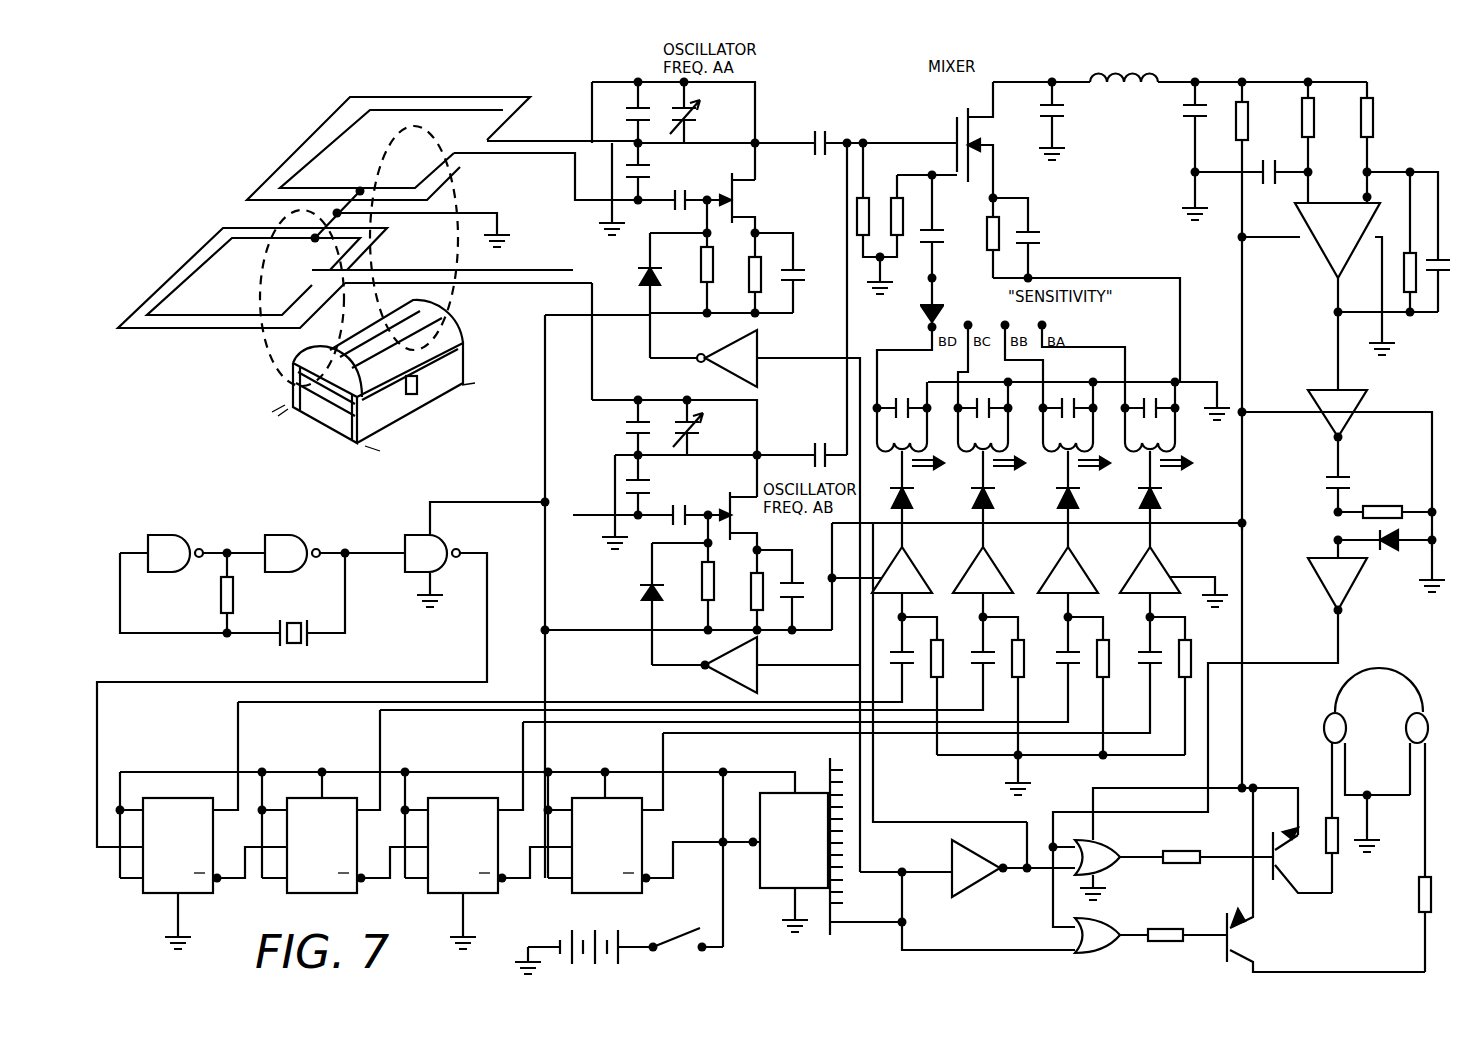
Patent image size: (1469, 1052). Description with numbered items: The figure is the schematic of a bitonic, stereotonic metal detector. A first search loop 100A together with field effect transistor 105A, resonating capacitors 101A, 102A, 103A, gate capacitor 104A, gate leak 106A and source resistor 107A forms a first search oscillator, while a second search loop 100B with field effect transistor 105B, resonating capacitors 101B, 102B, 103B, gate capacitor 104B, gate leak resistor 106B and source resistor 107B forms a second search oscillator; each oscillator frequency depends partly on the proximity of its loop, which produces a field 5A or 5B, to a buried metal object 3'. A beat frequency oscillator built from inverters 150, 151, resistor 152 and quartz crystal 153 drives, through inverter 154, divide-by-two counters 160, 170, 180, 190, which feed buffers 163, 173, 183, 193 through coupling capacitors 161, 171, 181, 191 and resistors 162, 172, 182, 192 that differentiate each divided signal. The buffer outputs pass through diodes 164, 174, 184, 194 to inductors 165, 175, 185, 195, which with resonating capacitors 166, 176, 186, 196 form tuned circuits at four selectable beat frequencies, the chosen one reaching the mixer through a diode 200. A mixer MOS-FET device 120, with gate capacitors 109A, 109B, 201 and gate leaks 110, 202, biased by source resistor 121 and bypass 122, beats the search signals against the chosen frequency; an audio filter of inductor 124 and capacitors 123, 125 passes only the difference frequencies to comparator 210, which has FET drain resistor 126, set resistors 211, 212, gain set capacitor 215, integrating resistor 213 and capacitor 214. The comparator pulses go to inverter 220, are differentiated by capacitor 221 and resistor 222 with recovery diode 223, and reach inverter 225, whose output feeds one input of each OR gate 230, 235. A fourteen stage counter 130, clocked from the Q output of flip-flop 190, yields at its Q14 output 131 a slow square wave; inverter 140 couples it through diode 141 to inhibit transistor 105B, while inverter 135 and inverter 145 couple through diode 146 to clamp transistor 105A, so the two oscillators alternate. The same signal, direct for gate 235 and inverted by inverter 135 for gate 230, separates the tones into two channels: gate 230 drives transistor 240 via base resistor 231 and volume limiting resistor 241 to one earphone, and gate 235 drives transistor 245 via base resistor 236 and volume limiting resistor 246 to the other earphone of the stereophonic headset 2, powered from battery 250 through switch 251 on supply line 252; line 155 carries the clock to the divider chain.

The headphones 2 is at (1385, 672).
The metal object 3' is at (373, 375).
The magnetic field of coil A 5A is at (455, 215).
The magnetic field of coil B 5B is at (278, 298).
The search loop 100A is at (332, 130).
The second search loop 100B is at (200, 268).
The resonating capacitor 101A is at (690, 122).
The resonating capacitor 101B is at (695, 432).
The resonating capacitor 102A is at (625, 108).
The resonating capacitor 102B is at (628, 420).
The resonating capacitor 103A is at (645, 175).
The resonating capacitor 103B is at (645, 492).
The gate capacitor 104A is at (676, 208).
The gate capacitor 104B is at (690, 504).
The field effect transistor 105A is at (740, 210).
The field effect transistor 105B is at (745, 517).
The gate leak 106A is at (700, 262).
The gate leak resistor 106B is at (700, 580).
The source resistor 107A is at (748, 268).
The source resistor 107B is at (750, 585).
The gate capacitor 109A is at (822, 133).
The gate capacitor 109B is at (818, 448).
The gate leak 110 is at (856, 222).
The MOS-FET device 120 is at (955, 127).
The source resistor 121 is at (996, 230).
The bypass 122 is at (1034, 240).
The capacitor 123 is at (1062, 125).
The inductor 124 is at (1133, 70).
The capacitor 125 is at (1185, 126).
The FET drain resistor 126 is at (1240, 135).
The fourteen stage counter 130 is at (806, 795).
The Q14 output 131 is at (845, 932).
The inverter 135 is at (975, 860).
The inverter 140 is at (735, 665).
The diode 141 is at (640, 596).
The inverter 145 is at (742, 350).
The diode 146 is at (640, 282).
The inverter 150 is at (178, 537).
The inverter 151 is at (296, 537).
The resistor 152 is at (234, 600).
The quartz crystal 153 is at (311, 620).
The inverter 154 is at (430, 545).
The clock line 155 is at (175, 680).
The divide-by-two counter 160 is at (178, 795).
The coupling capacitor 161 is at (892, 648).
The resistor 162 is at (936, 668).
The buffer 163 is at (905, 580).
The diode 164 is at (910, 500).
The inductor 165 is at (892, 452).
The resonating capacitor 166 is at (918, 398).
The divide-by-two counter 170 is at (330, 797).
The coupling capacitor 171 is at (973, 650).
The resistor 172 is at (1016, 668).
The buffer 173 is at (987, 580).
The diode 174 is at (992, 500).
The inductor 175 is at (974, 452).
The resonating capacitor 176 is at (979, 398).
The divide-by-two counter 180 is at (470, 797).
The coupling capacitor 181 is at (1058, 650).
The resistor 182 is at (1101, 668).
The buffer 183 is at (1072, 580).
The diode 184 is at (1077, 500).
The inductor 185 is at (1059, 452).
The resonating capacitor 186 is at (1064, 398).
The divide-by-two counter 190 is at (610, 797).
The coupling capacitor 191 is at (1140, 650).
The resistor 192 is at (1183, 668).
The buffer 193 is at (1154, 580).
The diode 194 is at (1159, 500).
The inductor 195 is at (1141, 452).
The resonating capacitor 196 is at (1147, 398).
The diode 200 is at (942, 300).
The gate capacitor 201 is at (940, 240).
The gate leak 202 is at (893, 200).
The comparator 210 is at (1340, 248).
The set resistor 211 is at (1412, 252).
The set resistor 212 is at (1373, 122).
The integrating resistor 213 is at (1303, 122).
The integrating capacitor 214 is at (1282, 152).
The gain set capacitor 215 is at (1440, 285).
The inverter 220 is at (1325, 400).
The capacitor 221 is at (1350, 482).
The resistor 222 is at (1388, 505).
The recovery diode 223 is at (1384, 550).
The inverter 225 is at (1333, 600).
The OR gate 230 is at (1098, 850).
The base resistor 231 is at (1185, 852).
The OR gate 235 is at (1103, 933).
The base resistor 236 is at (1172, 930).
The transistor 240 is at (1280, 830).
The volume limiting resistor 241 is at (1340, 850).
The transistor 245 is at (1240, 940).
The volume limiting resistor 246 is at (1420, 900).
The battery 250 is at (597, 932).
The power switch 251 is at (687, 927).
The power supply line 252 is at (1246, 532).